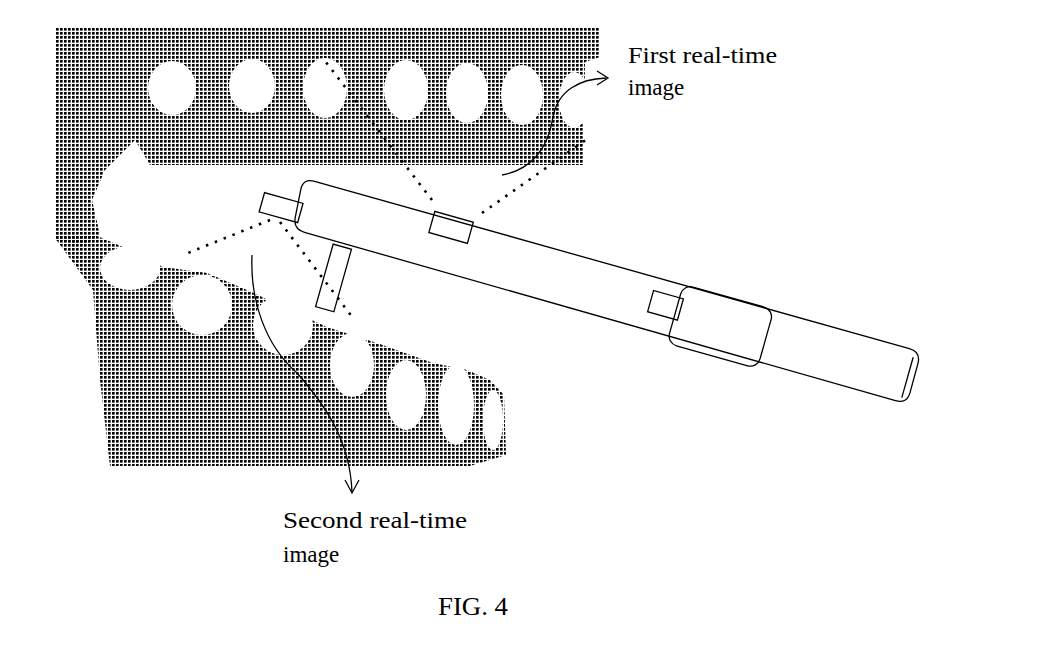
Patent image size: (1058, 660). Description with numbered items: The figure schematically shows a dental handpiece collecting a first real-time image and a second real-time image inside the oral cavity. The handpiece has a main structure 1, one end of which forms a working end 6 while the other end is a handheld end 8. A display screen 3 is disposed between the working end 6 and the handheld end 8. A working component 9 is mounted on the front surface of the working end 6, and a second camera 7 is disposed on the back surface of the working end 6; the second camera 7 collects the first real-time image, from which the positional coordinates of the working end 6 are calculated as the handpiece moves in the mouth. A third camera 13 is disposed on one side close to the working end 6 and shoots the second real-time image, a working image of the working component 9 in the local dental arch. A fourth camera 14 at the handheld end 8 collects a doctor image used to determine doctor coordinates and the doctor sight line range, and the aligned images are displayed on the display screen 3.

The main structure 1 is at (630, 244).
The display screen 3 is at (717, 330).
The working end 6 is at (375, 233).
The second camera 7 is at (450, 225).
The handheld end 8 is at (865, 355).
The working component 9 is at (340, 253).
The third camera 13 is at (280, 212).
The fourth camera 14 is at (667, 307).